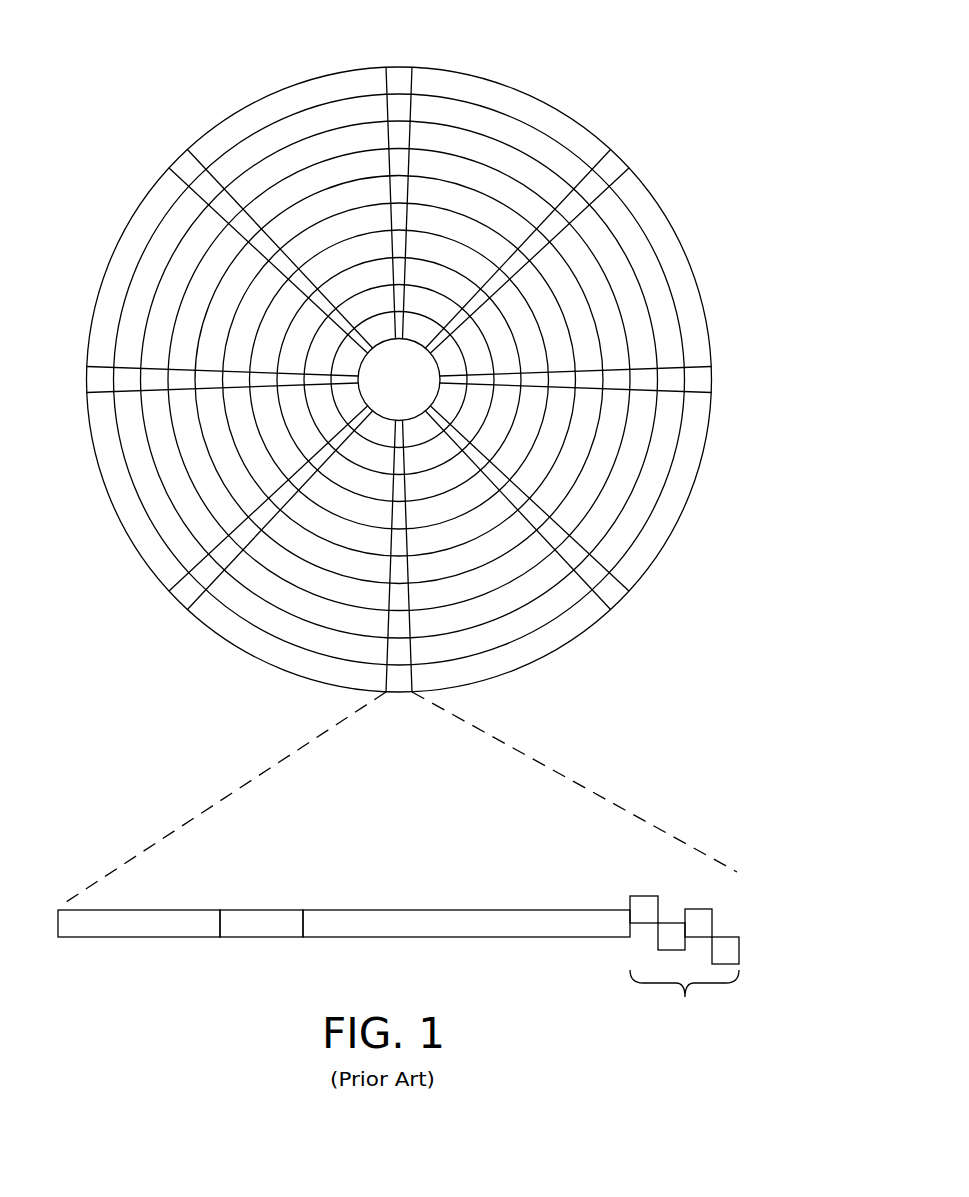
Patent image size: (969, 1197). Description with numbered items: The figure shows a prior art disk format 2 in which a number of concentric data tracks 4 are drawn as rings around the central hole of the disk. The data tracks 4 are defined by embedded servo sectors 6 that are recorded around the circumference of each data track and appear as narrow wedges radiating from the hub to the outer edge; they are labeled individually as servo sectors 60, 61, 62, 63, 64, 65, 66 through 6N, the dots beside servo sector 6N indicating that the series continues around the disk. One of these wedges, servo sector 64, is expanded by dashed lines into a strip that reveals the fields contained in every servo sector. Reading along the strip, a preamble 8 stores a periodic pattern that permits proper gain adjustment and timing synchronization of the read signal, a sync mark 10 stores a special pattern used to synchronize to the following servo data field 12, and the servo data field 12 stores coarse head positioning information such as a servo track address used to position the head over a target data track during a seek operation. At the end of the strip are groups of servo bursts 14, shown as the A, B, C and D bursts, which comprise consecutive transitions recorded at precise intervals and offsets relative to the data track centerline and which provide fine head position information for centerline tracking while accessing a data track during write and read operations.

The disk format 2 is at (160, 65).
The data tracks 4 is at (504, 128).
The servo sectors 6 is at (400, 390).
The servo sector 60 is at (400, 76).
The servo sector 61 is at (612, 165).
The servo sector 62 is at (705, 380).
The servo sector 63 is at (612, 593).
The servo sector 64 is at (256, 760).
The servo sector 65 is at (183, 598).
The servo sector 66 is at (90, 377).
The servo sector 6N is at (185, 160).
The preamble 8 is at (120, 937).
The sync mark 10 is at (262, 937).
The servo data field 12 is at (455, 937).
The servo bursts 14 is at (608, 872).